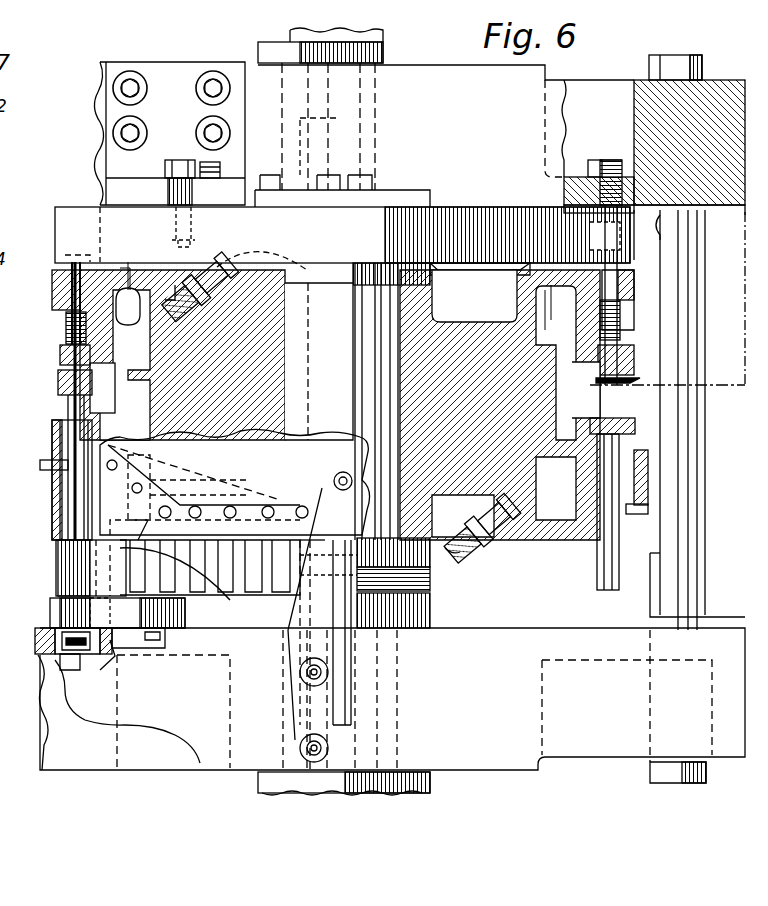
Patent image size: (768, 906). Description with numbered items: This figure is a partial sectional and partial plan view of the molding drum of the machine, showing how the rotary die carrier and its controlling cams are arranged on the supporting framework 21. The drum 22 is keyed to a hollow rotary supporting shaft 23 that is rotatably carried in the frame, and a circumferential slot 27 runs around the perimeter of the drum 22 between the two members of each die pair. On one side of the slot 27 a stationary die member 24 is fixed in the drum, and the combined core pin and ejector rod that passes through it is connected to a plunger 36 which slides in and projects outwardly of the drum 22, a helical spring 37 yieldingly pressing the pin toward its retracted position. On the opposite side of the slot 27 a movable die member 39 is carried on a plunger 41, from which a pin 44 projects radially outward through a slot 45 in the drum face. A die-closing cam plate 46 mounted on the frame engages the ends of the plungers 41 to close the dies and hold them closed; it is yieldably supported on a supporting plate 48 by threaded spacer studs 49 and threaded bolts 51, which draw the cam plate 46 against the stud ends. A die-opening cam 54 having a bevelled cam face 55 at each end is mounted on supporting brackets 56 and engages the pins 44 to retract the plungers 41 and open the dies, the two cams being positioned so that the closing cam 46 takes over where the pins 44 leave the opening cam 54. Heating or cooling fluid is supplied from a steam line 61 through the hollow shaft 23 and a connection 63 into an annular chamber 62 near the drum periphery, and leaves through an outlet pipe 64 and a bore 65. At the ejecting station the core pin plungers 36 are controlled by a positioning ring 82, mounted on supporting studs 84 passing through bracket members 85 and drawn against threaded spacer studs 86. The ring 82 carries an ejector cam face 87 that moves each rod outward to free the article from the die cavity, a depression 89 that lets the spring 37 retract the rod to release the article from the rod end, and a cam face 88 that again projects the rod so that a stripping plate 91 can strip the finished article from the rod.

The supporting framework 21 is at (535, 88).
The drum 22 is at (540, 532).
The hollow rotary supporting shaft 23 is at (396, 45).
The stationary die member 24 is at (62, 366).
The circumferential slot 27 is at (48, 408).
The plunger 36 is at (72, 283).
The helical spring 37 is at (66, 322).
The movable die member 39 is at (62, 383).
The plunger 41 is at (72, 493).
The pin 44 is at (44, 465).
The slot 45 is at (148, 510).
The die-closing cam plate 46 is at (56, 575).
The supporting plate 48 is at (52, 614).
The threaded spacer studs 49 is at (58, 636).
The threaded bolts 51 is at (128, 645).
The die-opening cam 54 is at (300, 456).
The bevelled cam face 55 is at (160, 480).
The supporting brackets 56 is at (330, 486).
The steam line 61 is at (325, 100).
The annular chamber 62 is at (126, 265).
The connection 63 is at (225, 268).
The outlet pipe 64 is at (460, 552).
The bore 65 is at (360, 738).
The positioning ring 82 is at (75, 222).
The supporting studs 84 is at (180, 160).
The bracket members 85 is at (134, 185).
The threaded spacer studs 86 is at (218, 165).
The ejector cam face 87 is at (506, 272).
The ejector cam face 88 is at (628, 268).
The depression 89 is at (550, 262).
The stripping plate 91 is at (618, 380).